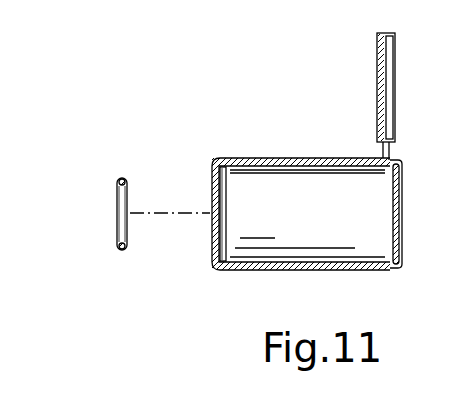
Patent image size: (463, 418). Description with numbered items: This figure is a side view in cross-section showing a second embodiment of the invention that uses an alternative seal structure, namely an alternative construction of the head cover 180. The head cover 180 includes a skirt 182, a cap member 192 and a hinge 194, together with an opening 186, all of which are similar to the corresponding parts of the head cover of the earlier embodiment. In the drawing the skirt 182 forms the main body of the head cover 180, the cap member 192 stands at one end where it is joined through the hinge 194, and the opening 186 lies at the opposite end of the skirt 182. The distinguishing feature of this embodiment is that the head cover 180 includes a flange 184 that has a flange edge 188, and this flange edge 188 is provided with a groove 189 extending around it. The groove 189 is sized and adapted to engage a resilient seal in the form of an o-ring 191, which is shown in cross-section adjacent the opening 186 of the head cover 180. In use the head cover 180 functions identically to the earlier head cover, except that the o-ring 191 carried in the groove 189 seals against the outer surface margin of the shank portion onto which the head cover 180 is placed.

The head cover 180 is at (228, 102).
The skirt 182 is at (343, 157).
The flange 184 is at (215, 179).
The opening 186 is at (208, 222).
The flange edge 188 is at (219, 241).
The groove 189 is at (224, 190).
The o-ring 191 is at (119, 178).
The cap member 192 is at (377, 78).
The hinge 194 is at (393, 150).